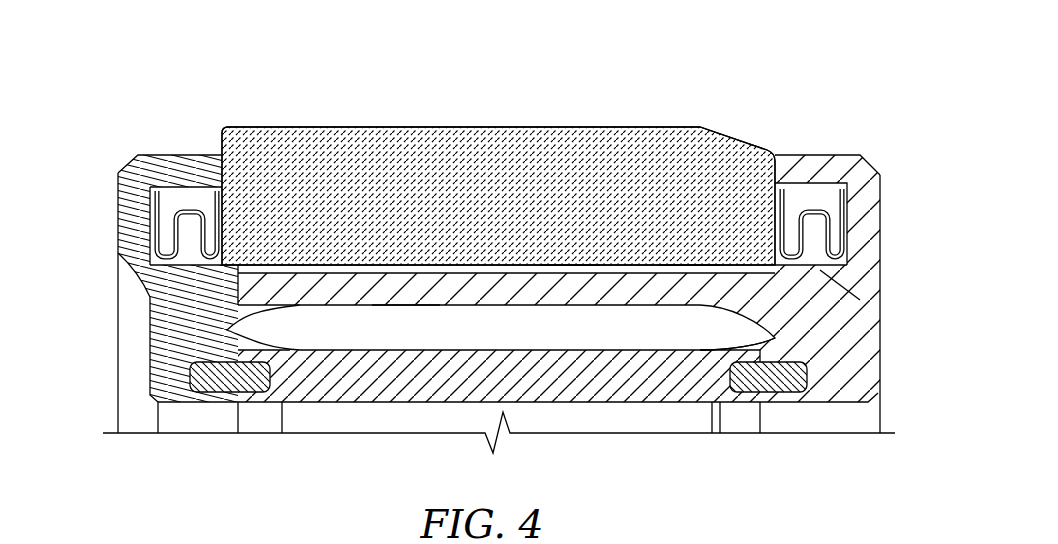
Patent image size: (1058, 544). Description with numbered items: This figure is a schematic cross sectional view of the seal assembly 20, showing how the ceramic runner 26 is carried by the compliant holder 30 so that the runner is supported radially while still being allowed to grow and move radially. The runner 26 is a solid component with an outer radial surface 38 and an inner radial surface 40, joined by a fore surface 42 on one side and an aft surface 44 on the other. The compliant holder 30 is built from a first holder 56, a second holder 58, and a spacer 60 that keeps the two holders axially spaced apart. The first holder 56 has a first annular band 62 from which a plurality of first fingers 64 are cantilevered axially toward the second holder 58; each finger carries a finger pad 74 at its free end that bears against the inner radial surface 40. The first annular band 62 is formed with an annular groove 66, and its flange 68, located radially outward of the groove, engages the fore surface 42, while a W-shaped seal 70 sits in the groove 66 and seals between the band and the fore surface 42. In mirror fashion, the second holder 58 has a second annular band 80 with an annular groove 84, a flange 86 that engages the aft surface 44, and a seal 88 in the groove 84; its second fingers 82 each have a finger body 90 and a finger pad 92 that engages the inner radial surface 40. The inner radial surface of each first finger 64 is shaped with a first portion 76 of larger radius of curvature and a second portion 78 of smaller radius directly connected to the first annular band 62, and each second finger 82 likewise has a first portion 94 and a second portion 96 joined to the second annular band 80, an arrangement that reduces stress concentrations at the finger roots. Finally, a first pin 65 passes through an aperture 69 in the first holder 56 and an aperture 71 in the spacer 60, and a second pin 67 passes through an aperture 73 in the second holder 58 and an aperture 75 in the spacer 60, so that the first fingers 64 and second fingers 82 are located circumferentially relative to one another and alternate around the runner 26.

The seal assembly 20 is at (118, 80).
The runner 26 is at (515, 138).
The compliant holder 30 is at (498, 158).
The outer radial surface 38 is at (390, 126).
The inner radial surface 40 is at (562, 286).
The fore surface 42 is at (220, 157).
The aft surface 44 is at (790, 156).
The first holder 56 is at (118, 152).
The second holder 58 is at (888, 160).
The spacer 60 is at (536, 406).
The first annular band 62 is at (146, 358).
The first fingers 64 is at (233, 303).
The first pin 65 is at (226, 393).
The annular groove 66 is at (176, 185).
The second pin 67 is at (763, 372).
The flange 68 is at (198, 160).
The aperture 69 is at (192, 390).
The seal 70 is at (124, 170).
The aperture 71 is at (280, 418).
The aperture 73 is at (807, 392).
The finger pad 74 is at (697, 268).
The aperture 75 is at (730, 382).
The first portion 76 is at (226, 332).
The second portion 78 is at (276, 352).
The second annular band 80 is at (845, 300).
The second fingers 82 is at (441, 312).
The annular groove 84 is at (815, 192).
The flange 86 is at (822, 153).
The seal 88 is at (828, 220).
The finger body 90 is at (372, 302).
The finger pad 92 is at (288, 266).
The first portion 94 is at (712, 350).
The second portion 96 is at (735, 345).